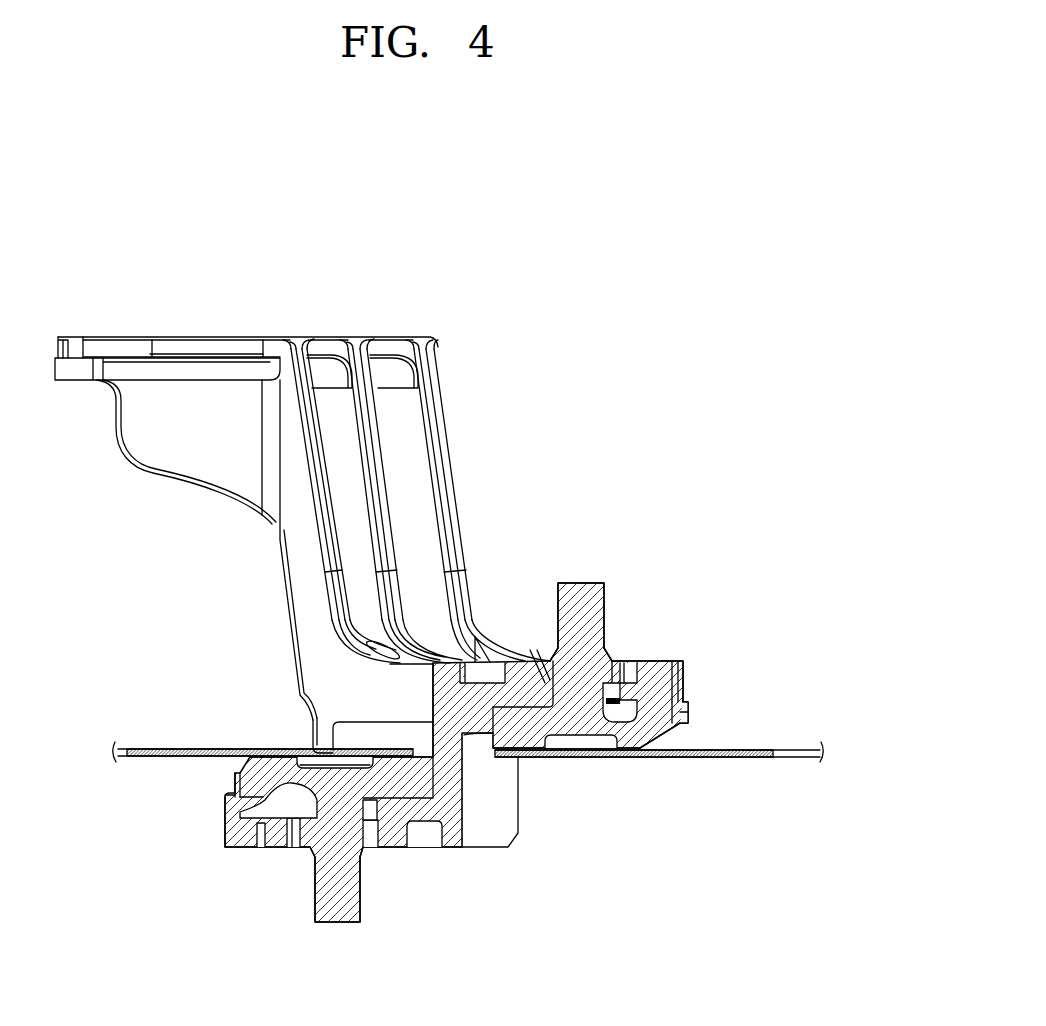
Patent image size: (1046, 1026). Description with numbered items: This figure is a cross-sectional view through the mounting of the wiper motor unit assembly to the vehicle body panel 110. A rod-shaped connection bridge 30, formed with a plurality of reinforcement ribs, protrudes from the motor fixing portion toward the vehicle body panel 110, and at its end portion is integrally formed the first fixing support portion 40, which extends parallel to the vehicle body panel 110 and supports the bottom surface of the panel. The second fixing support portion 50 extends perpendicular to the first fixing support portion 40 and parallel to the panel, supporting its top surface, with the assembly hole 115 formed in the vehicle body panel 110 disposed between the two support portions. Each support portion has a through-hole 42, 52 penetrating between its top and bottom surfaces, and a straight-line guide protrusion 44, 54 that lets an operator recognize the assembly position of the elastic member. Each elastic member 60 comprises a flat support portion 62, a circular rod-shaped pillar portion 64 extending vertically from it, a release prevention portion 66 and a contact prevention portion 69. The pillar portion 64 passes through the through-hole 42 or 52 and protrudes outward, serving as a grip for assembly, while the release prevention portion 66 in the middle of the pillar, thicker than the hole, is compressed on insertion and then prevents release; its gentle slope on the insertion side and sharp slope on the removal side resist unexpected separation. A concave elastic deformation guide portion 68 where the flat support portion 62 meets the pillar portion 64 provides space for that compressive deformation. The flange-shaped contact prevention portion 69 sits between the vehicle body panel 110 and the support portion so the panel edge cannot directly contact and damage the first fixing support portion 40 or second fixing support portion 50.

The connection bridge 30 is at (441, 479).
The first fixing support portion 40 is at (228, 850).
The through-hole 42 is at (242, 811).
The guide protrusion 44 is at (234, 786).
The second fixing support portion 50 is at (665, 660).
The through-hole 52 is at (640, 706).
The guide protrusion 54 is at (686, 720).
The elastic member 60 is at (594, 581).
The flat support portion 62 is at (527, 749).
The pillar portion 64 is at (600, 600).
The release prevention portion 66 is at (608, 667).
The elastic deformation guide portion 68 is at (598, 738).
The contact prevention portion 69 is at (397, 730).
The vehicle body panel 110 is at (175, 749).
The assembly hole 115 is at (470, 757).